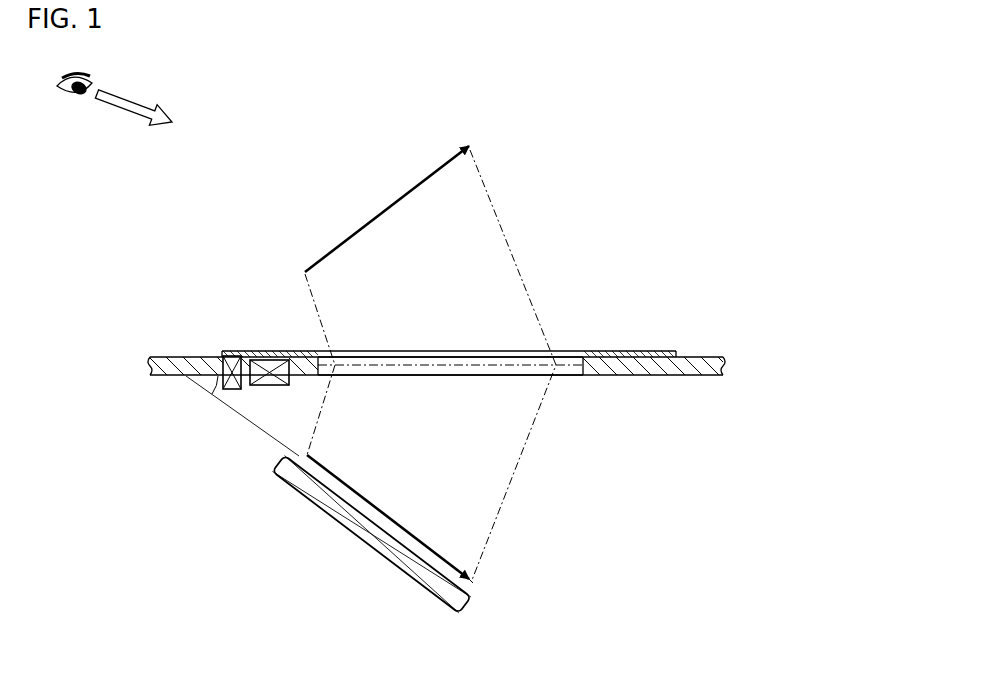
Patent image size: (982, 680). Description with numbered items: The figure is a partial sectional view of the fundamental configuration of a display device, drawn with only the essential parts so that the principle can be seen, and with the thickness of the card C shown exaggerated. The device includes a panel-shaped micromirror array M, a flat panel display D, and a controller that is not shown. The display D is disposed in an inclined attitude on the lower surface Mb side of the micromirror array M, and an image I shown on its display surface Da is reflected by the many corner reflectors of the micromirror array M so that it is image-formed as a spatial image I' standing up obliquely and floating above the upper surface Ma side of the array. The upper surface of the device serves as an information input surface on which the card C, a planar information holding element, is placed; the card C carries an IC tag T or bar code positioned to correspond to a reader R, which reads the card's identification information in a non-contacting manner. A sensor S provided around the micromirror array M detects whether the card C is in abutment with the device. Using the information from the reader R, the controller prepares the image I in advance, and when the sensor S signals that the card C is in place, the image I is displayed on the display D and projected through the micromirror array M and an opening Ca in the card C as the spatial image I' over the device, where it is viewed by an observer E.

The observer eye / viewing direction E is at (114, 109).
The card C is at (627, 347).
The opening Ca is at (318, 351).
The micromirror array M is at (456, 355).
The upper surface Ma is at (568, 356).
The lower surface Mb is at (567, 377).
The pattern plane P is at (490, 376).
The IC tag T is at (262, 351).
The reader R is at (270, 381).
The sensor S is at (232, 390).
The spatial image I' is at (387, 300).
The image I is at (431, 365).
The display D is at (340, 535).
The display surface Da is at (473, 582).